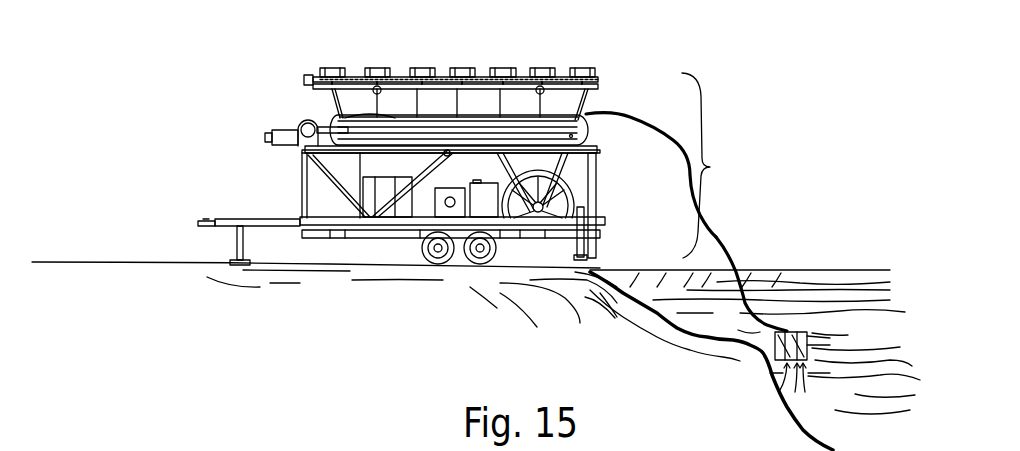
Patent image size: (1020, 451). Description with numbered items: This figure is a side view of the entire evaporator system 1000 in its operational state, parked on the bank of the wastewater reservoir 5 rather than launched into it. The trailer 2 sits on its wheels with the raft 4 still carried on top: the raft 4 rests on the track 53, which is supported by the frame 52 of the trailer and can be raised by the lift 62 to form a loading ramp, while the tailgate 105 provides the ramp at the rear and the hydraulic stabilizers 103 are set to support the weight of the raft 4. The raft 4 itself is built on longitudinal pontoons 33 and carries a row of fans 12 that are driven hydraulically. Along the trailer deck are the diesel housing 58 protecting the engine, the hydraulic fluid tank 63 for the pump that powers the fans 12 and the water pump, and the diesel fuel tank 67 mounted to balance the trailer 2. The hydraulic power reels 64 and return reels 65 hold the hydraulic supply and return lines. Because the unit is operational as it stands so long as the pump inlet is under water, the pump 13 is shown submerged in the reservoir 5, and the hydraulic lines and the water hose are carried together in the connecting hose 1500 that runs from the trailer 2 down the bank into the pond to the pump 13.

The trailer 2 is at (248, 220).
The raft 4 is at (583, 104).
The wastewater reservoir 5 is at (734, 324).
The fans 12 is at (380, 67).
The pump 13 is at (800, 332).
The longitudinal pontoons 33 is at (451, 133).
The frame 52 is at (305, 173).
The track 53 is at (597, 147).
The diesel housing 58 is at (382, 198).
The lift 62 is at (432, 167).
The hydraulic fluid tank 63 is at (450, 208).
The hydraulic power reels 64 is at (540, 178).
The return reels 65 is at (573, 192).
The diesel fuel tank 67 is at (483, 198).
The hydraulic stabilizers 103 is at (582, 247).
The tailgate 105 is at (596, 205).
The evaporator system 1000 is at (723, 165).
The connecting hose 1500 is at (725, 232).